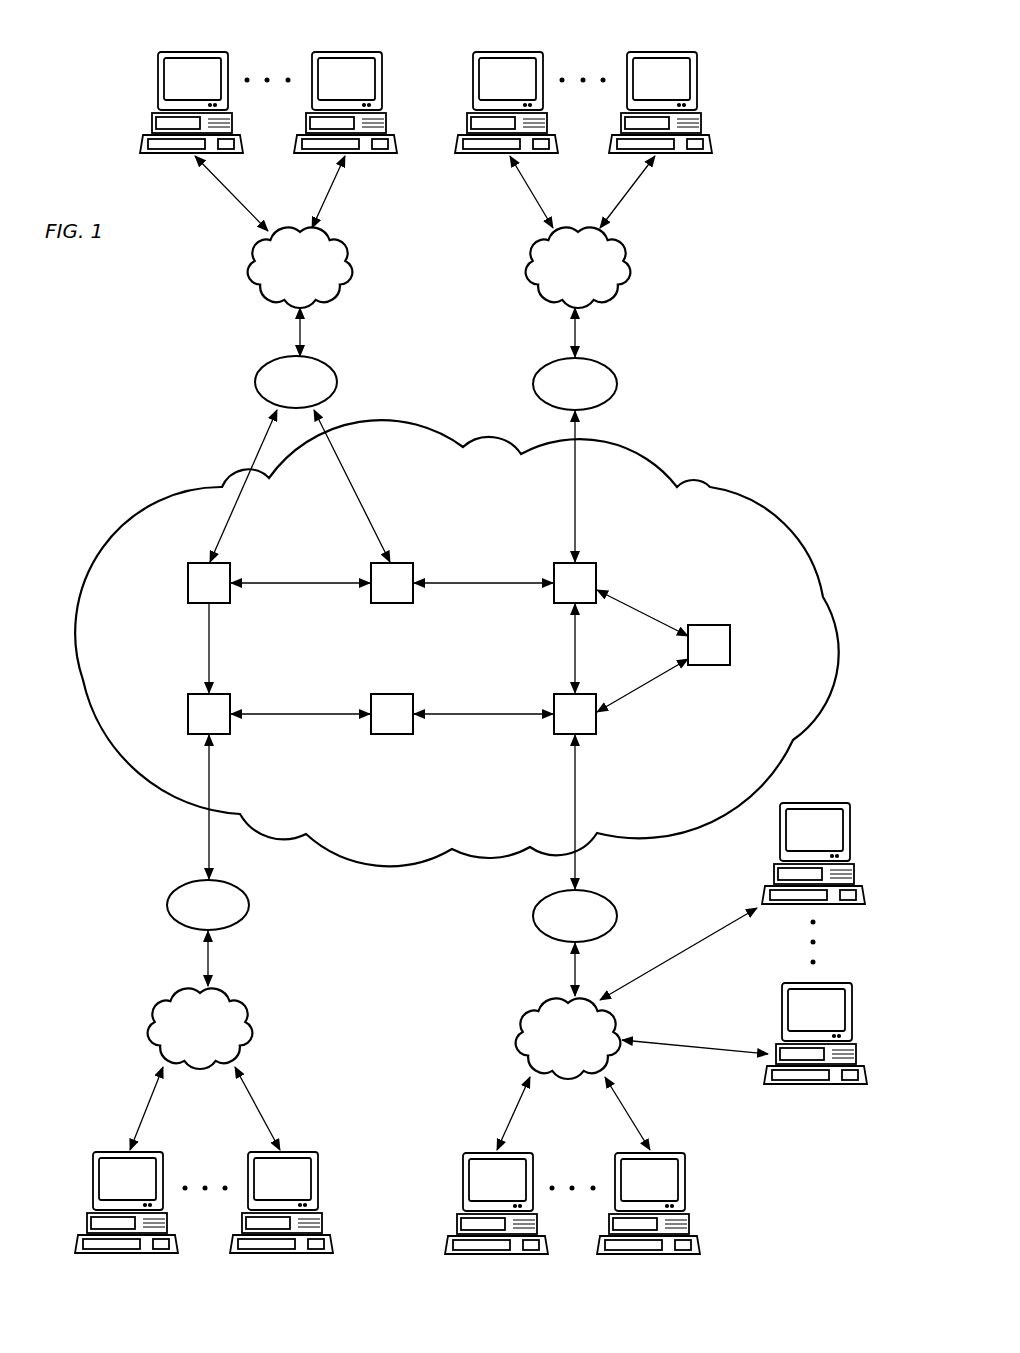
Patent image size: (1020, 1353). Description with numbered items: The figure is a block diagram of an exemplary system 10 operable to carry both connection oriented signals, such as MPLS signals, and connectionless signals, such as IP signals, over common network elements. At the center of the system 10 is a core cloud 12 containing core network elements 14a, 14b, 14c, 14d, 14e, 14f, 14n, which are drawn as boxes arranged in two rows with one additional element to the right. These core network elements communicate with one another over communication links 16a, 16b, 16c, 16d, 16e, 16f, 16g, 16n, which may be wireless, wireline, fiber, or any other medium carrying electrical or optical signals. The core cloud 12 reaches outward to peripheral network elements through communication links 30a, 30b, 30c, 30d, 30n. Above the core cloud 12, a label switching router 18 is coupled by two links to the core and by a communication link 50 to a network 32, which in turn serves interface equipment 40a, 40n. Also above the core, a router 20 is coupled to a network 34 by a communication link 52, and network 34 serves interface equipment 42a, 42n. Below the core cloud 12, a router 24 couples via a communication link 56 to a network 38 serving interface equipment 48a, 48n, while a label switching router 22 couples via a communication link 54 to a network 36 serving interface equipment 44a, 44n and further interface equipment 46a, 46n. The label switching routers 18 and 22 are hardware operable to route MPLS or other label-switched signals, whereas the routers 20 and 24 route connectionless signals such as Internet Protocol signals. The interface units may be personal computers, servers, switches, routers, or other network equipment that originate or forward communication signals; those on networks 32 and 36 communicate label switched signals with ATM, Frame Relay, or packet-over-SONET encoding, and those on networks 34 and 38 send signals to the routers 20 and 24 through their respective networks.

The system 10 is at (768, 102).
The core cloud 12 is at (708, 488).
The core network element 14a is at (188, 716).
The core network element 14b is at (187, 580).
The core network element 14c is at (390, 608).
The core network element 14d is at (585, 563).
The core network element 14e is at (588, 693).
The core network element 14f is at (730, 648).
The core network element 14n is at (393, 737).
The communication link 16a is at (207, 648).
The communication link 16b is at (300, 582).
The communication link 16c is at (483, 582).
The communication link 16d is at (570, 648).
The communication link 16e is at (481, 718).
The communication link 16f is at (637, 603).
The communication link 16g is at (647, 685).
The communication link 16n is at (300, 718).
The label switching router 18 is at (257, 383).
The router 20 is at (618, 378).
The label switching router 22 is at (617, 915).
The router 24 is at (167, 903).
The communication link 30a is at (207, 840).
The communication link 30b is at (260, 450).
The communication link 30c is at (355, 483).
The communication link 30d is at (572, 487).
The communication link 30n is at (578, 793).
The network 32 is at (313, 279).
The network 34 is at (591, 279).
The network 36 is at (581, 1050).
The network 38 is at (213, 1040).
The interface equipment 40a is at (191, 52).
The interface equipment 40n is at (345, 52).
The interface equipment 42a is at (530, 52).
The interface equipment 42n is at (683, 52).
The interface equipment 44a is at (478, 1153).
The interface equipment 44n is at (667, 1153).
The interface equipment 46a is at (780, 833).
The interface equipment 46n is at (782, 1012).
The interface equipment 48a is at (110, 1152).
The interface equipment 48n is at (298, 1152).
The communication link 50 is at (292, 332).
The communication link 52 is at (578, 332).
The communication link 54 is at (573, 970).
The communication link 56 is at (207, 960).